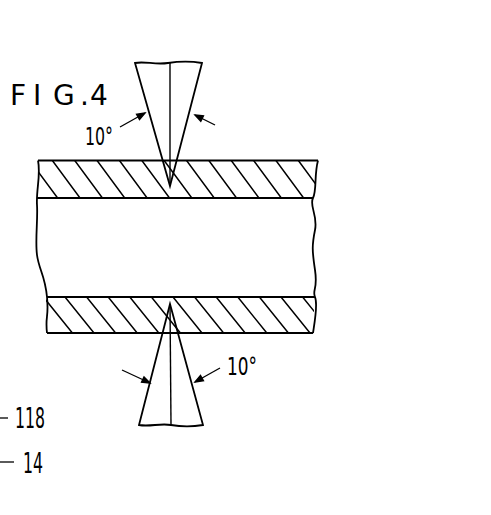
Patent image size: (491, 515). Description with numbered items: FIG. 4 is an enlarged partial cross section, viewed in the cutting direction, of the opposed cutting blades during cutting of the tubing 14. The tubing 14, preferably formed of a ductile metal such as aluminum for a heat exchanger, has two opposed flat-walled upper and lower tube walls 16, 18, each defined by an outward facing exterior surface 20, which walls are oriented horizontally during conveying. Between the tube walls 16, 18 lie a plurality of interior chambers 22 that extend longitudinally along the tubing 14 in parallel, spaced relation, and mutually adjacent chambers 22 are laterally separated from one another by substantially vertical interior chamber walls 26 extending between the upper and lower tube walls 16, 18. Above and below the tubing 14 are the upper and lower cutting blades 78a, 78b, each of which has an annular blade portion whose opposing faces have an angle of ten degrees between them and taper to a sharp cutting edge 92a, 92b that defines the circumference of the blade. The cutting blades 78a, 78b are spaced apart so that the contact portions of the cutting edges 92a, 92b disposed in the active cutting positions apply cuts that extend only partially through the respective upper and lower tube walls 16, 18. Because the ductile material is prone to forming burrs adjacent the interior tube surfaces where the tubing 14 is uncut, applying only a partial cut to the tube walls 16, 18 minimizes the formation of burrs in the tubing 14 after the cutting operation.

The tubing 14 is at (312, 159).
The upper tube wall 16 is at (262, 159).
The lower tube wall 18 is at (263, 334).
The exterior surface 20 is at (224, 160).
The interior chamber 22 is at (300, 263).
The interior chamber wall 26 is at (310, 220).
The upper cutting blade 78a is at (183, 72).
The lower cutting blade 78b is at (158, 418).
The cutting edge 92a is at (167, 187).
The cutting edge 92b is at (170, 299).